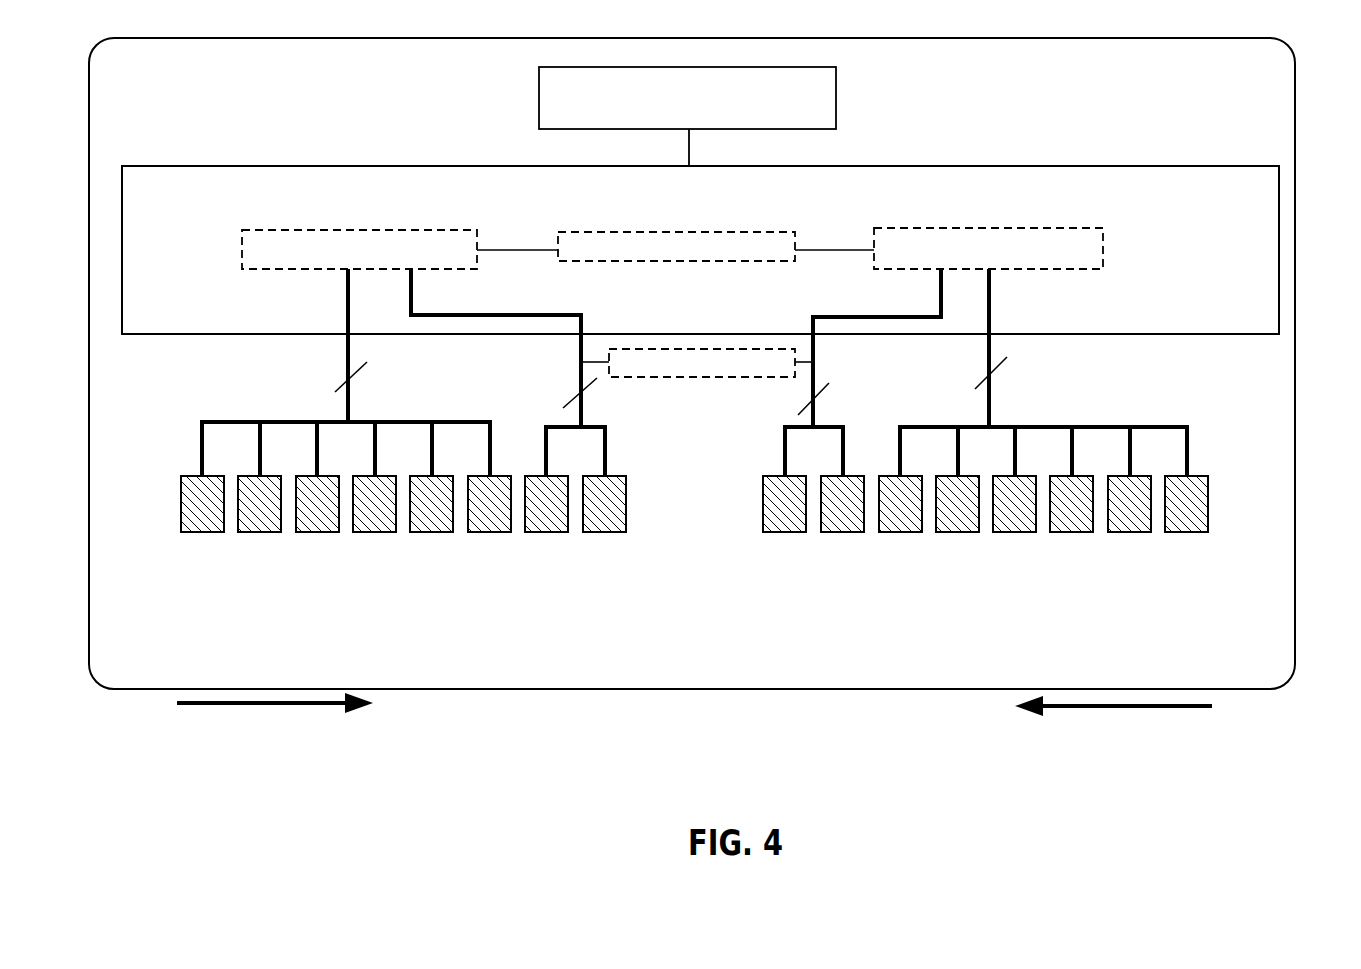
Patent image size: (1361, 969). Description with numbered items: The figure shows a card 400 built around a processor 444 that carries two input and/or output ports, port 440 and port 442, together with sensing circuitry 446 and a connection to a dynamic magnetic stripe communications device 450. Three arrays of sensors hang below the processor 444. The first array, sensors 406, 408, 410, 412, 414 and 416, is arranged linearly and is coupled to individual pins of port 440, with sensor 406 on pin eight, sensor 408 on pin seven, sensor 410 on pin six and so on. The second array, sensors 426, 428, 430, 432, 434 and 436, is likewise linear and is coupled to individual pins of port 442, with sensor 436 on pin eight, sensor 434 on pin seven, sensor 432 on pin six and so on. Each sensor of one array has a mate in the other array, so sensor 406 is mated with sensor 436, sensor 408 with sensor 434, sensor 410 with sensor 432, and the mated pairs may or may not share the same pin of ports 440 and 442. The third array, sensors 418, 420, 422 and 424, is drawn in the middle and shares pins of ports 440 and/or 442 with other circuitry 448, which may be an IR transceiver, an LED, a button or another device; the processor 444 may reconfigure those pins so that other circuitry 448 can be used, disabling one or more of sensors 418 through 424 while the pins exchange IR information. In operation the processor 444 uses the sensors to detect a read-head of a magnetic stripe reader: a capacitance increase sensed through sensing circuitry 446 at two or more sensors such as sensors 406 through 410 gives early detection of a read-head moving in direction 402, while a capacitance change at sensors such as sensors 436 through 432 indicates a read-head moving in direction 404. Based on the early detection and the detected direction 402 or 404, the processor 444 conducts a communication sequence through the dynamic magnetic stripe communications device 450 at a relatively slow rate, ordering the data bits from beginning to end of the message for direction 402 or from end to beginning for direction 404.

The card 400 is at (1326, 376).
The direction 402 is at (233, 706).
The direction 404 is at (1157, 708).
The sensor 406 is at (189, 533).
The sensor 408 is at (246, 533).
The sensor 410 is at (304, 533).
The sensor 412 is at (361, 533).
The sensor 414 is at (418, 533).
The sensor 416 is at (476, 533).
The sensor 418 is at (533, 533).
The sensor 420 is at (591, 533).
The sensor 422 is at (774, 533).
The sensor 424 is at (832, 533).
The sensor 426 is at (893, 533).
The sensor 428 is at (951, 533).
The sensor 430 is at (1009, 533).
The sensor 432 is at (1068, 533).
The sensor 434 is at (1130, 533).
The sensor 436 is at (1206, 533).
The input and/or output port 440 is at (253, 230).
The input and/or output port 442 is at (898, 228).
The processor 444 is at (533, 166).
The sensing circuitry 446 is at (743, 232).
The other circuitry 448 is at (658, 377).
The dynamic magnetic stripe communications device 450 is at (836, 82).